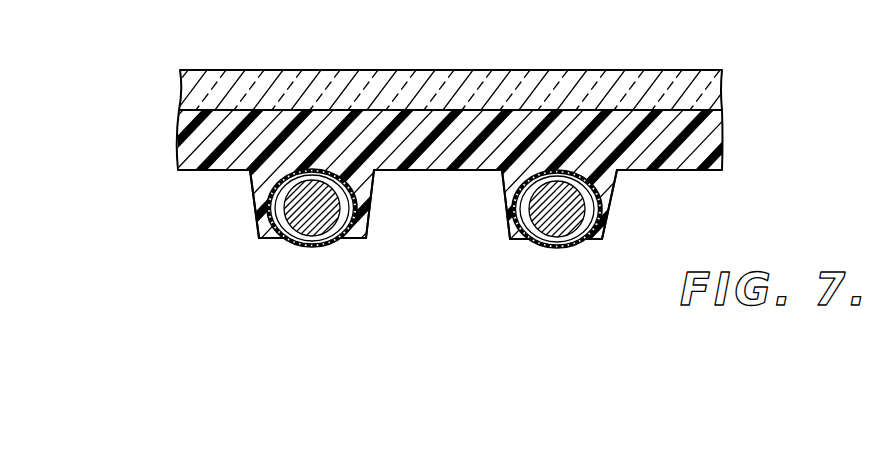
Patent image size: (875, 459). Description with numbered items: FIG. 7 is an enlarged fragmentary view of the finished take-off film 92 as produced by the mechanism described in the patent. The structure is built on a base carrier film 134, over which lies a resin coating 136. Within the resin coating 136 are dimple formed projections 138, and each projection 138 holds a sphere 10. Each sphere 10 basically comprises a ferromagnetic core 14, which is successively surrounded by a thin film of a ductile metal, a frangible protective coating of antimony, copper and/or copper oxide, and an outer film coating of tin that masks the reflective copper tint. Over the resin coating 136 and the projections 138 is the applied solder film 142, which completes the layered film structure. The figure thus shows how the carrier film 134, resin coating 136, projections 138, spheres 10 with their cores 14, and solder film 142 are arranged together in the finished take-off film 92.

The take-off film 92 is at (431, 125).
The base carrier film 134 is at (327, 67).
The resin coating 136 is at (688, 173).
The dimple formed projection 138 is at (510, 223).
The sphere 10 is at (427, 234).
The ferromagnetic core 14 is at (548, 229).
The applied solder film 142 is at (567, 246).